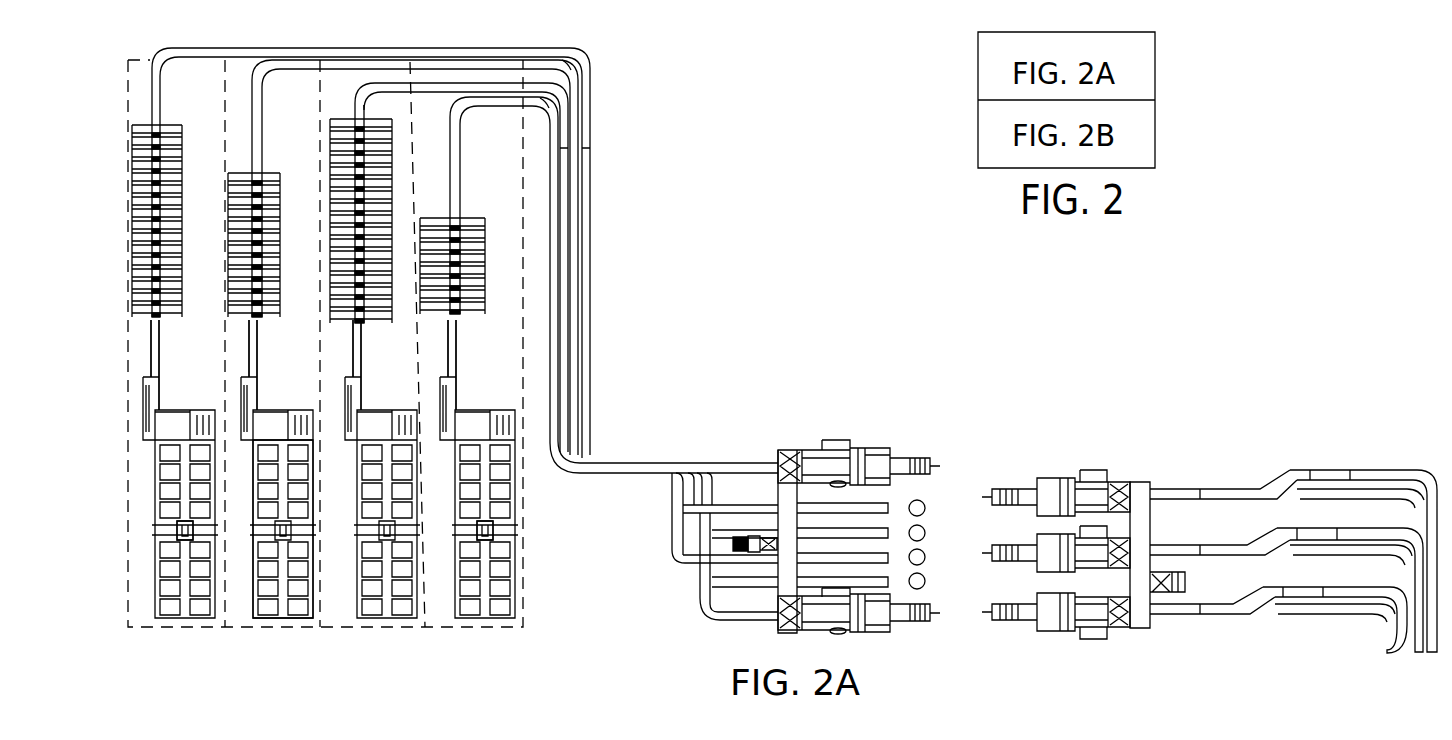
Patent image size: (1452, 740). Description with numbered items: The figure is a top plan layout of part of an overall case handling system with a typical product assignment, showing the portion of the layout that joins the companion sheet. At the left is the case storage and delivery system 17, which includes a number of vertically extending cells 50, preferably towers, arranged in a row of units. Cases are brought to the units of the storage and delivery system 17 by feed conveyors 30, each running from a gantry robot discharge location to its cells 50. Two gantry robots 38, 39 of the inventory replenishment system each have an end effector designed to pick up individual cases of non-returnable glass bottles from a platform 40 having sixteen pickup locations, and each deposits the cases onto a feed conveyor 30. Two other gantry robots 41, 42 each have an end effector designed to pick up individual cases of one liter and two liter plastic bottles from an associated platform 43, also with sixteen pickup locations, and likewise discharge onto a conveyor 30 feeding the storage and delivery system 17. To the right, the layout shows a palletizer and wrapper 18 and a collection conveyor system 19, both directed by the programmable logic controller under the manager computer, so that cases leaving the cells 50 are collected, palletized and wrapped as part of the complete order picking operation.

The case storage and delivery system 17 is at (122, 201).
The palletizer and wrapper 18 is at (852, 447).
The collection conveyor system 19 is at (603, 111).
The feed conveyor 30 is at (160, 356).
The gantry robot 38 is at (178, 538).
The gantry robot 39 is at (272, 558).
The platform 40 is at (158, 624).
The gantry robot 41 is at (385, 535).
The gantry robot 42 is at (490, 536).
The platform 43 is at (483, 608).
The cell 50 is at (133, 127).